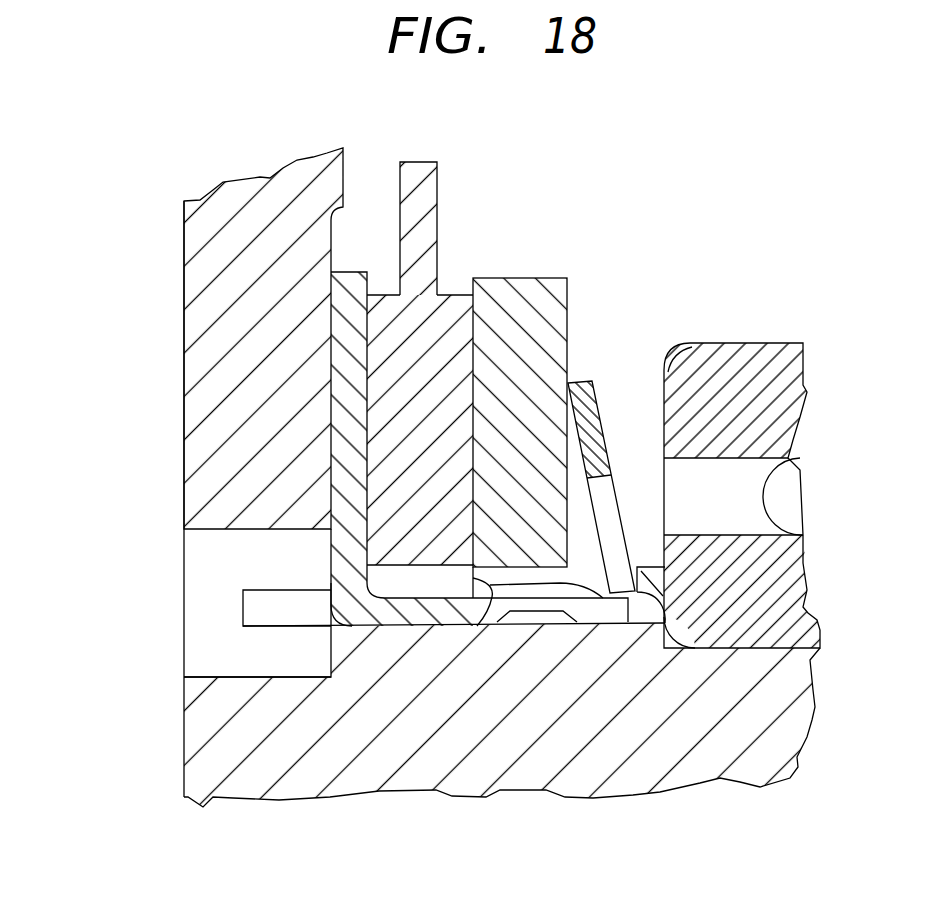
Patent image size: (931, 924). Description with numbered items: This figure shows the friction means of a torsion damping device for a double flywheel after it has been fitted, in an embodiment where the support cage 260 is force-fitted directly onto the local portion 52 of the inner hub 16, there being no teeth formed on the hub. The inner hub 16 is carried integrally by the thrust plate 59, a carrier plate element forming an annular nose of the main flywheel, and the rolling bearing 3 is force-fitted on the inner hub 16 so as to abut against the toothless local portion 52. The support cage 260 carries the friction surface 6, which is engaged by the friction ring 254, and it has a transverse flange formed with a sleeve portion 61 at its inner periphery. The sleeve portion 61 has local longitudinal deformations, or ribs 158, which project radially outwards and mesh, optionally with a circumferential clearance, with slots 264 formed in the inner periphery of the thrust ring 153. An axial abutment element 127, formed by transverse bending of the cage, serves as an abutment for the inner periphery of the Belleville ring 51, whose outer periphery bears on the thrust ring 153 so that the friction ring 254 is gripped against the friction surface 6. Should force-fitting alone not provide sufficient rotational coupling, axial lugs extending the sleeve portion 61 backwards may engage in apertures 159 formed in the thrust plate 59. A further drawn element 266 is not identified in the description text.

The rolling bearing 3 is at (737, 343).
The friction surface 6 is at (386, 460).
The inner hub 16 is at (215, 732).
The Belleville ring 51 is at (600, 397).
The local portion 52 is at (605, 648).
The thrust plate 59 is at (218, 382).
The sleeve portion 61 is at (382, 617).
The abutment element 127 is at (650, 605).
The thrust ring 153 is at (514, 278).
The ribs 158 is at (533, 598).
The apertures 159 is at (245, 529).
The friction ring 254 is at (420, 162).
The support cage 260 is at (350, 272).
The slots 264 is at (478, 600).
The recess 266 is at (243, 613).